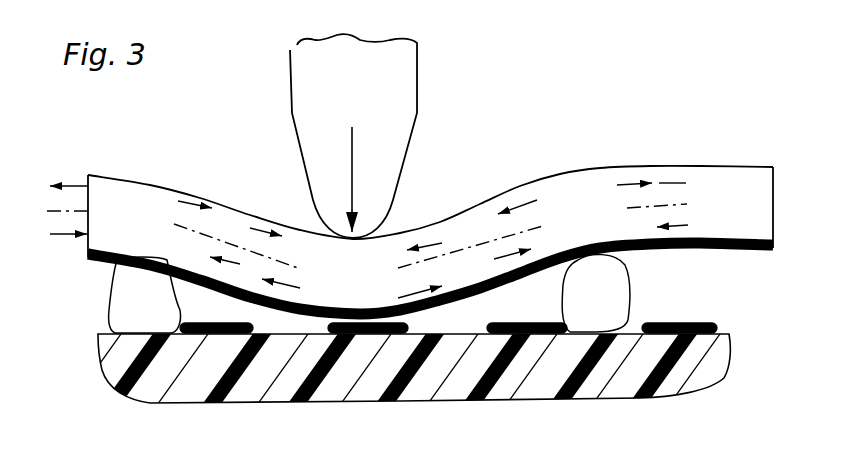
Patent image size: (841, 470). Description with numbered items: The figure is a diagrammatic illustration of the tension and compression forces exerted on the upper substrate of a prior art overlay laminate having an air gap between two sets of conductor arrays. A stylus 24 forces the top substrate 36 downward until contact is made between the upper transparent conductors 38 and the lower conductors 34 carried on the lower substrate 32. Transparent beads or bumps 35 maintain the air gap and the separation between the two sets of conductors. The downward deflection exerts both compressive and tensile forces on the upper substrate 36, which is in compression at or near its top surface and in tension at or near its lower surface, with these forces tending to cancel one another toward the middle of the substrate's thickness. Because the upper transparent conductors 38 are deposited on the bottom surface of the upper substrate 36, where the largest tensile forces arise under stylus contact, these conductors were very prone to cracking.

The stylus 24 is at (410, 97).
The lower substrate 32 is at (180, 395).
The lower conductors 34 is at (192, 324).
The transparent beads or bumps 35 is at (625, 289).
The upper substrate 36 is at (523, 183).
The upper transparent conductors 38 is at (110, 260).